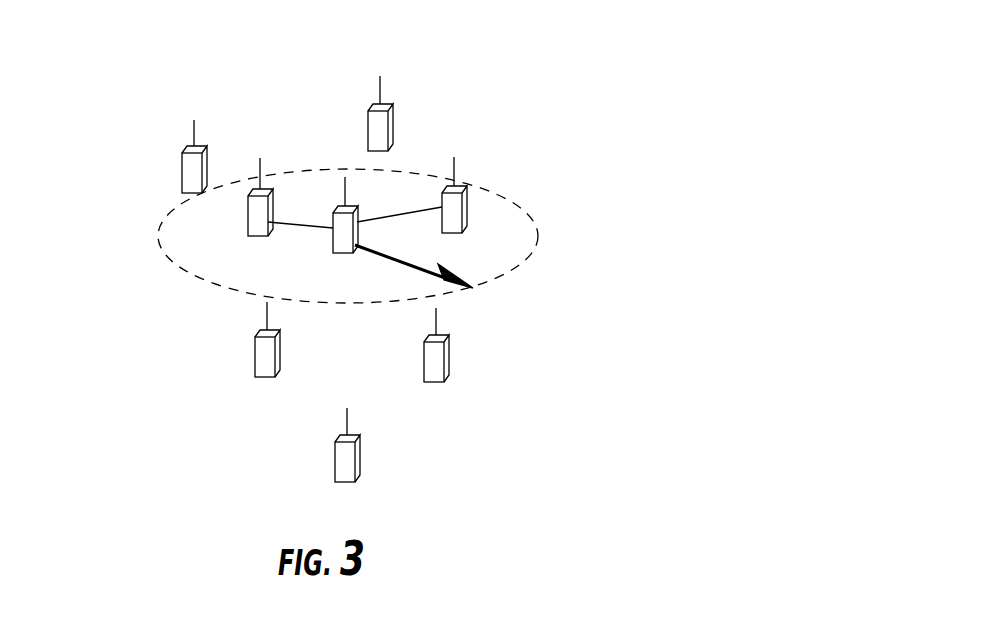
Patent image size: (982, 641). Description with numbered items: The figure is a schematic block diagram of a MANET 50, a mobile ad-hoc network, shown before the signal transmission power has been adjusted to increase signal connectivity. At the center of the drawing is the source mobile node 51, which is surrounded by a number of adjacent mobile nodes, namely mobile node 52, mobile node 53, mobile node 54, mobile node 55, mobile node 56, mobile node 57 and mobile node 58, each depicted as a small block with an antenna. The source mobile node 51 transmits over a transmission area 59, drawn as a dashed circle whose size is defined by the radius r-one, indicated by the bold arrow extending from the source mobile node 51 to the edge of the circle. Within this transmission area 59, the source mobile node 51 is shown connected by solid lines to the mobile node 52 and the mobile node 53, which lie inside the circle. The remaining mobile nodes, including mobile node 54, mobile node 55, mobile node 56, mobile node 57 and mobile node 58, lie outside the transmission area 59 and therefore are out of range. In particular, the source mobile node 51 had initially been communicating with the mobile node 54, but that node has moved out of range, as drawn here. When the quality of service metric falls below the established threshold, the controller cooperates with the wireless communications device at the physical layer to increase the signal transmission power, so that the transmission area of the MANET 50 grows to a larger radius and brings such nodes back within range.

The MANET 50 is at (537, 58).
The source mobile node 51 is at (333, 217).
The mobile node 52 is at (248, 218).
The mobile node 53 is at (466, 206).
The mobile node 54 is at (182, 167).
The mobile node 55 is at (393, 123).
The mobile node 56 is at (255, 362).
The mobile node 57 is at (358, 460).
The mobile node 58 is at (448, 352).
The transmission area 59 is at (539, 240).